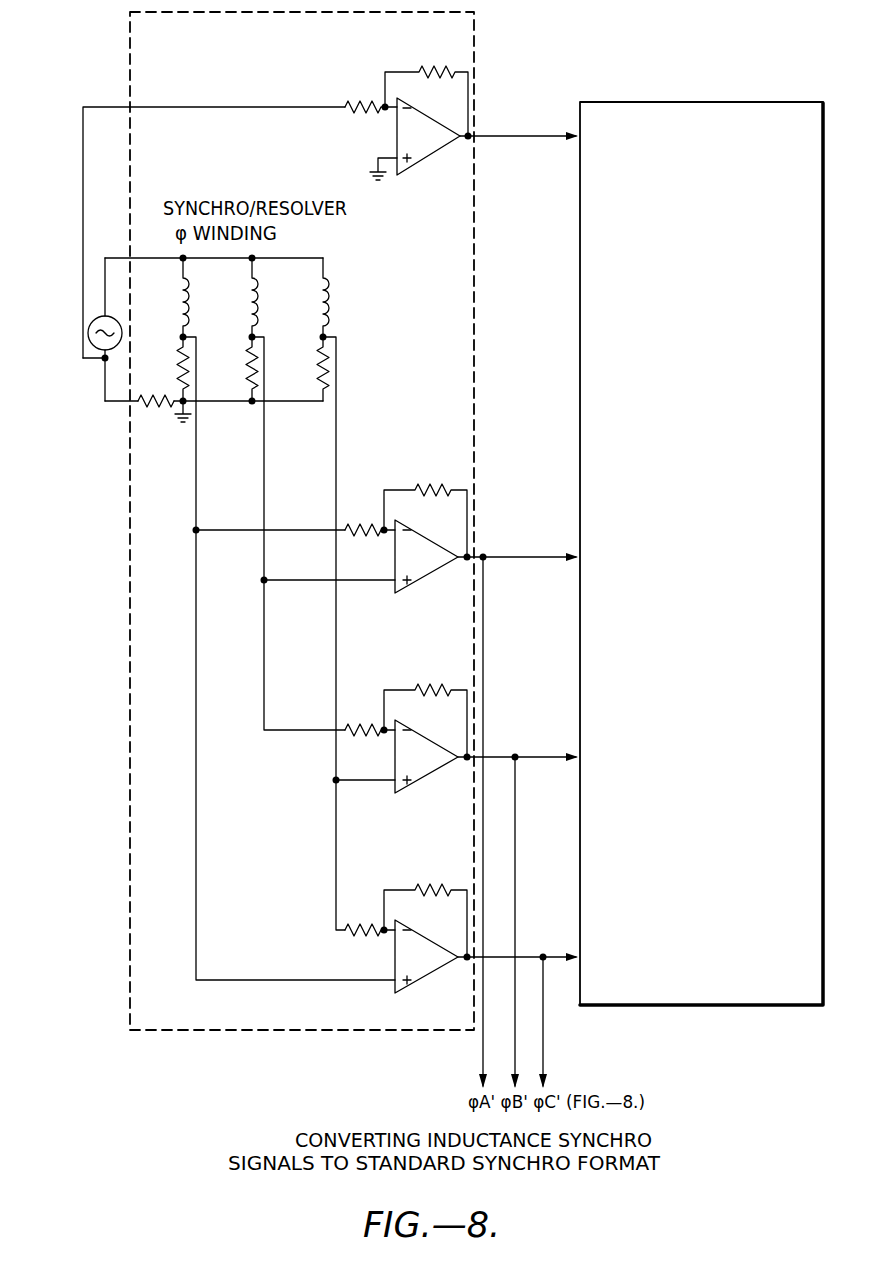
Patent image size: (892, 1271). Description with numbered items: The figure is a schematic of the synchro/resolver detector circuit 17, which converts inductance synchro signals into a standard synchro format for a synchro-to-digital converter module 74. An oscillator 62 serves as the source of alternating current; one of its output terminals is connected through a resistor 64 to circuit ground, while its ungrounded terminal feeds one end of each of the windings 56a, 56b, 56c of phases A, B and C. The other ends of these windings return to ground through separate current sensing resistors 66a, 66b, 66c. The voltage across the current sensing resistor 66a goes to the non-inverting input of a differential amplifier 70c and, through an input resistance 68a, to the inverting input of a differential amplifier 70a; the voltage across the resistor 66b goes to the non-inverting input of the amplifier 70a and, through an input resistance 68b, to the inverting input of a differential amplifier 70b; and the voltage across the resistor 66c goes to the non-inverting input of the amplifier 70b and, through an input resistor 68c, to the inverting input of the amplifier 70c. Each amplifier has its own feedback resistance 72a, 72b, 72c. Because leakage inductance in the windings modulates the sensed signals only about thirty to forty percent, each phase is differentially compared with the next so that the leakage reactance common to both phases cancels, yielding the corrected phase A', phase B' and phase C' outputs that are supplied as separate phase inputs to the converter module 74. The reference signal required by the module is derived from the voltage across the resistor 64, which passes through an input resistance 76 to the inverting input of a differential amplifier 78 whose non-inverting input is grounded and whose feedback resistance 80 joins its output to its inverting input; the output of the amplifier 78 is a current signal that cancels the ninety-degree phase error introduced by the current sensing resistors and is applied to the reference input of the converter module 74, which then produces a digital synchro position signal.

The detector circuit 17 is at (476, 40).
The synchro-to-digital converter module 74 is at (768, 102).
The oscillator 62 is at (117, 320).
The resistor 64 is at (140, 408).
The windings of phase A 56a is at (182, 318).
The windings of phase B 56b is at (252, 318).
The windings of phase C 56c is at (324, 319).
The current sensing resistor 66a is at (177, 360).
The current sensing resistor 66b is at (245, 361).
The current sensing resistor 66c is at (314, 362).
The input resistance 68a is at (349, 525).
The input resistance 68b is at (349, 725).
The input resistor 68c is at (349, 925).
The differential amplifier 70a is at (424, 578).
The differential amplifier 70b is at (424, 778).
The differential amplifier 70c is at (424, 980).
The feedback resistance 72a is at (422, 490).
The feedback resistance 72b is at (422, 690).
The feedback resistance 72c is at (422, 890).
The input resistance 76 is at (359, 102).
The differential amplifier 78 is at (412, 107).
The feedback resistance 80 is at (428, 70).